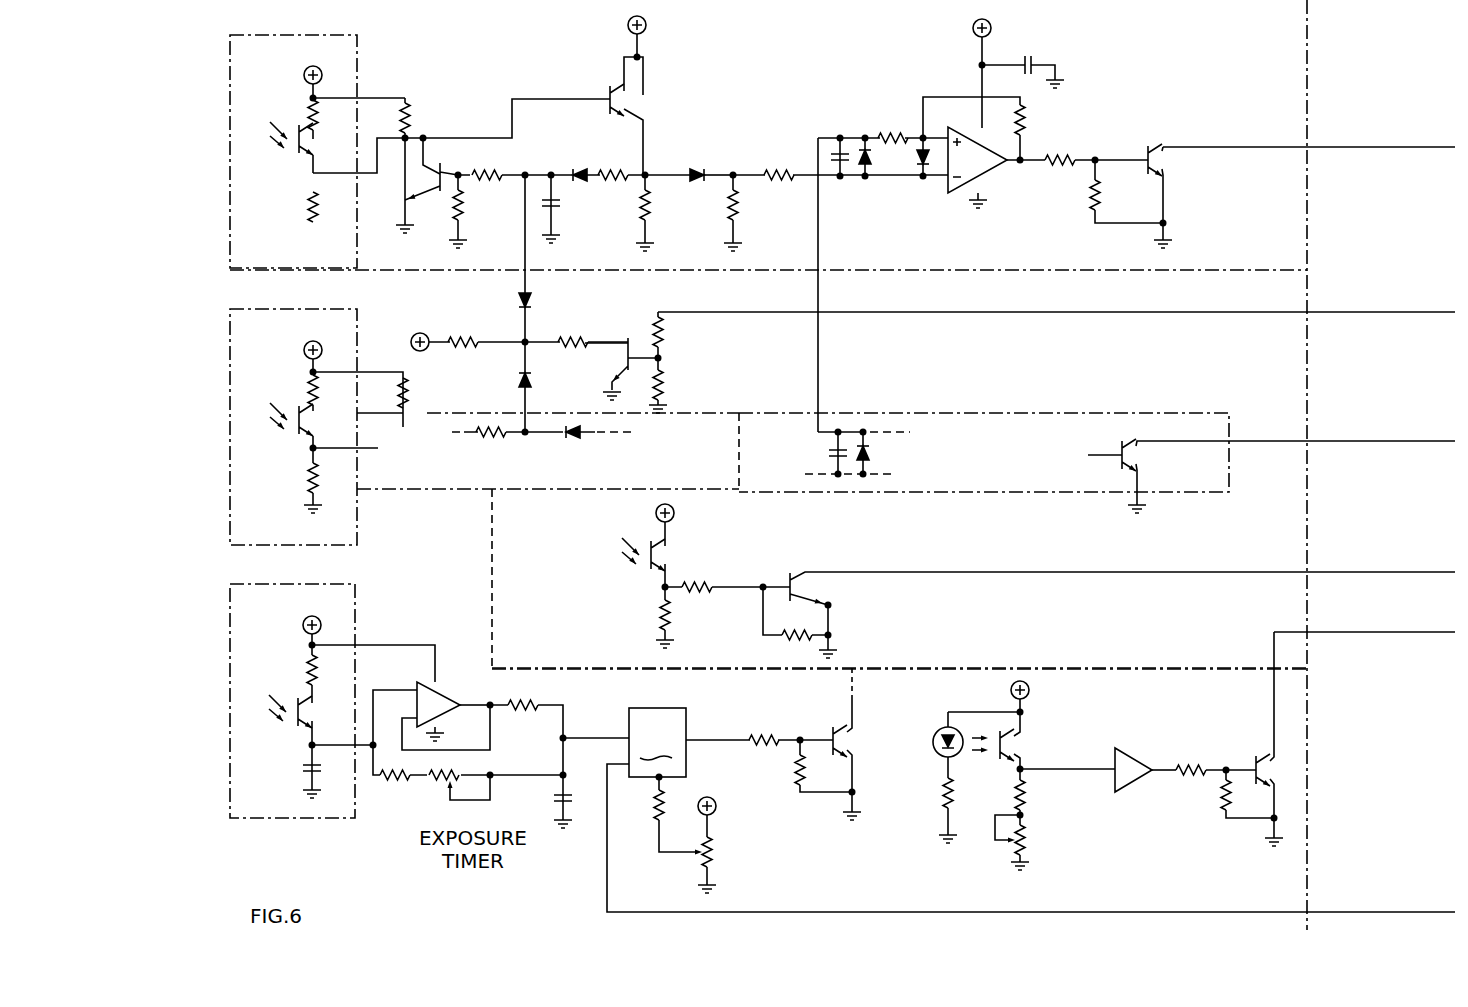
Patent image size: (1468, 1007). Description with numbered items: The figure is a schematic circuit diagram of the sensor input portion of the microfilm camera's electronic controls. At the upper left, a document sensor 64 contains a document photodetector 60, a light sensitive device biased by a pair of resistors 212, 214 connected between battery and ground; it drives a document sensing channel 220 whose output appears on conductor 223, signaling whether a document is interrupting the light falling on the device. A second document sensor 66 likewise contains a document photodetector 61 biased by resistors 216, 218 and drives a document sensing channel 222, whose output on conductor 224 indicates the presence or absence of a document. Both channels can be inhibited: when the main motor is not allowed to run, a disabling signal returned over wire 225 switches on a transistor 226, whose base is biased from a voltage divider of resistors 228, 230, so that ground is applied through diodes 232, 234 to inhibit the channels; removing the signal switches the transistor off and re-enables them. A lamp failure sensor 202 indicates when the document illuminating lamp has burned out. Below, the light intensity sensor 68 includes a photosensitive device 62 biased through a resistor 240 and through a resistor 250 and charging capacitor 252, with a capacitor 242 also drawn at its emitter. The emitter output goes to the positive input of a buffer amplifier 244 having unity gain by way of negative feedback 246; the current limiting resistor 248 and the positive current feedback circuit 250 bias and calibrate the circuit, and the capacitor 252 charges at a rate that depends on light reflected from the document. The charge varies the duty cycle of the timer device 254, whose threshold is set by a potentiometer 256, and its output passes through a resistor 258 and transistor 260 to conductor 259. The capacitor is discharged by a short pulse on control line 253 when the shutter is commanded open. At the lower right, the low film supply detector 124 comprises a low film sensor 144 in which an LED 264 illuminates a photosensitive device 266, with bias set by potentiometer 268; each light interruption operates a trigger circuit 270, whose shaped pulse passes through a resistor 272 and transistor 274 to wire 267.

The document sensor 64 is at (130, 146).
The resistor 212 is at (306, 120).
The document photodetector 60 is at (303, 163).
The resistor 214 is at (318, 204).
The document sensing channel 220 is at (758, 109).
The conductor 223 is at (1330, 147).
The wire 225 is at (1043, 312).
The conductor 224 is at (1337, 441).
The document sensing channel 222 is at (694, 457).
The diode 232 is at (533, 300).
The diode 234 is at (535, 380).
The transistor 226 is at (646, 332).
The resistor 228 is at (665, 321).
The resistor 230 is at (665, 384).
The document sensor 66 is at (118, 430).
The resistor 216 is at (306, 388).
The document photodetector 61 is at (300, 447).
The resistor 218 is at (306, 490).
The lamp failure sensor 202 is at (538, 641).
The light intensity sensor 68 is at (118, 714).
The resistor 240 is at (306, 678).
The photosensitive device 62 is at (300, 742).
The capacitor 242 is at (302, 770).
The buffer amplifier 244 is at (440, 698).
The negative feedback 246 is at (492, 740).
The current limiting resistor 248 is at (510, 703).
The positive current feedback circuit 250 is at (440, 777).
The charging capacitor 252 is at (556, 801).
The timer device 254 is at (642, 780).
The potentiometer 256 is at (700, 866).
The resistor 258 is at (768, 735).
The transistor 260 is at (840, 735).
The conductor 259 is at (855, 708).
The optical coupler low film sensor 144 is at (977, 706).
The LED 264 is at (934, 752).
The photosensitive device 266 is at (1012, 742).
The potentiometer 268 is at (1025, 817).
The trigger circuit 270 is at (1140, 760).
The resistor 272 is at (1203, 765).
The transistor 274 is at (1268, 771).
The wire 267 is at (1368, 632).
The control line 253 is at (607, 912).
The end of film detector 124 is at (1180, 909).